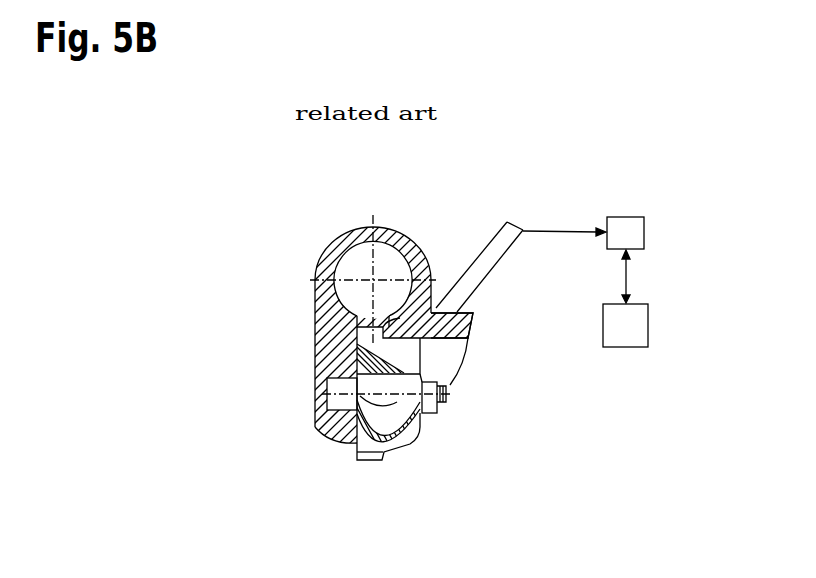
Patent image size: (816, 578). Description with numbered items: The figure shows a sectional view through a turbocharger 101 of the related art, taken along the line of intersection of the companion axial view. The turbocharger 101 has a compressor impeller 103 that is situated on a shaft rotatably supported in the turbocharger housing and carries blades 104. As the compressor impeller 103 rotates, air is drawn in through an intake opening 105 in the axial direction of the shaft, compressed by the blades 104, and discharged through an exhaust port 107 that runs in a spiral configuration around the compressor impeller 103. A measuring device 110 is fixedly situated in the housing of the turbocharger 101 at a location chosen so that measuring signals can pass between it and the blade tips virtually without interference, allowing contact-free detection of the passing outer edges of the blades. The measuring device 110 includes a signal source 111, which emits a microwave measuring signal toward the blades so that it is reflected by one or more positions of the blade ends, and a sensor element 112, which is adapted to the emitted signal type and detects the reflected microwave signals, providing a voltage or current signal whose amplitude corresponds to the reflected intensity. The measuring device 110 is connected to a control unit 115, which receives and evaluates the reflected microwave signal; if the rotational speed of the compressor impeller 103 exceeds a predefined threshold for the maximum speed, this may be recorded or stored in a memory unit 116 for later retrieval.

The turbocharger 101 is at (359, 221).
The compressor impeller 103 is at (352, 447).
The blades 104 is at (413, 438).
The intake opening 105 is at (447, 358).
The exhaust port 107 is at (347, 256).
The measuring device 110 is at (503, 236).
The signal source 111 is at (445, 291).
The sensor element 112 is at (467, 333).
The control unit 115 is at (626, 219).
The memory unit 116 is at (630, 347).